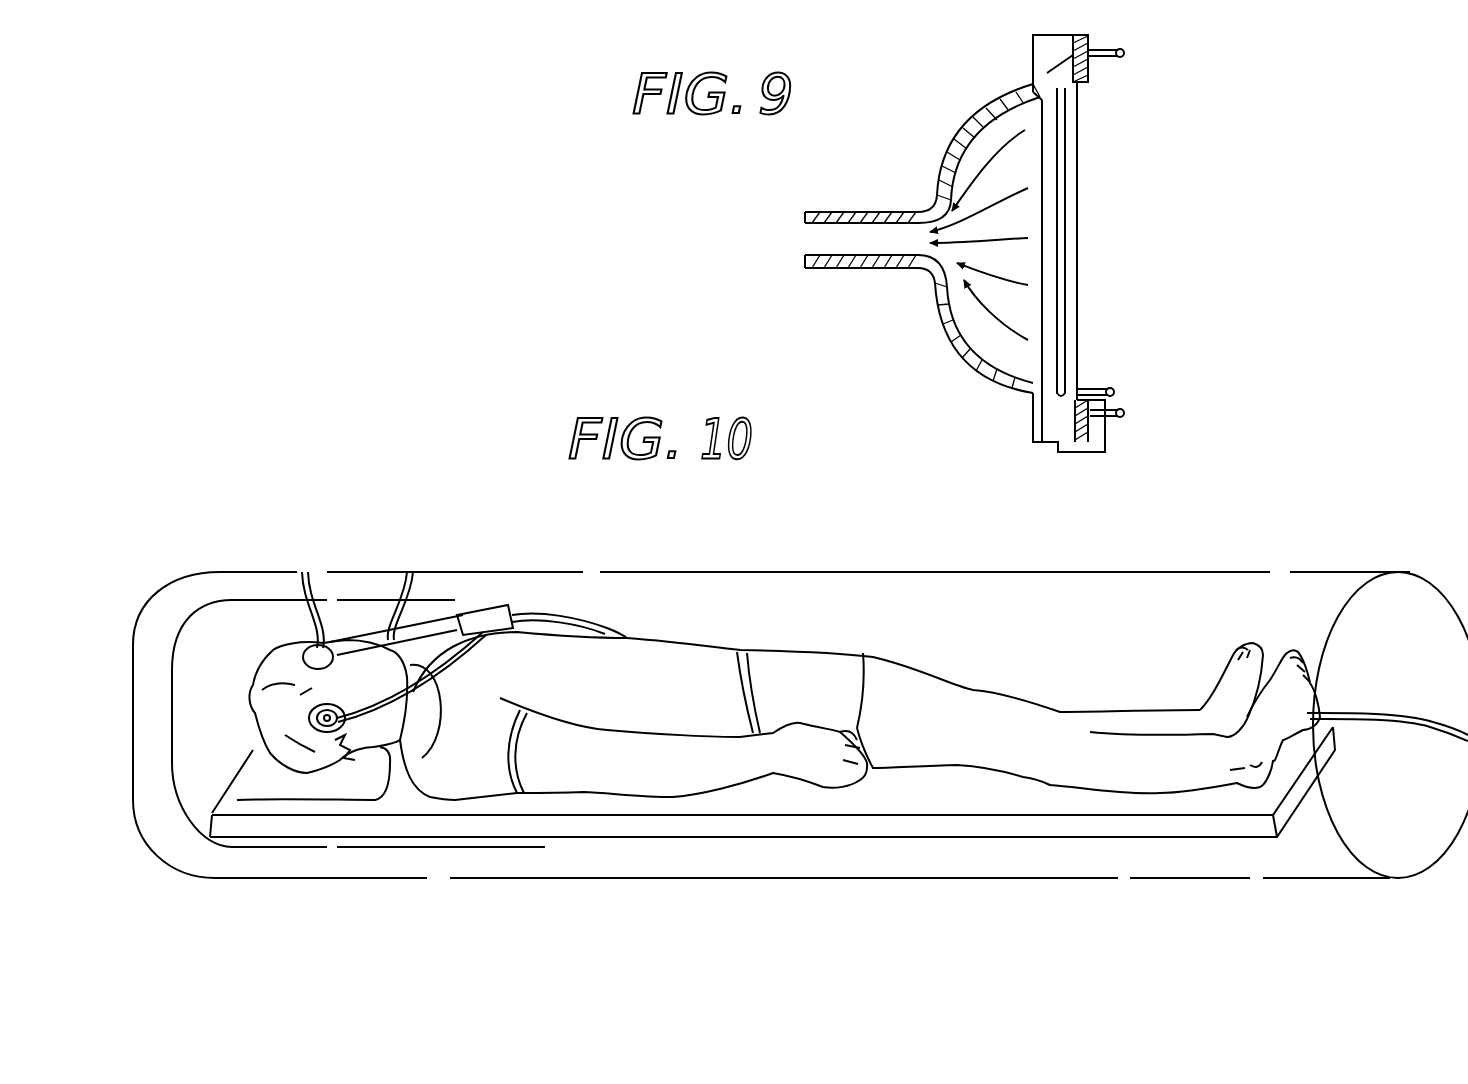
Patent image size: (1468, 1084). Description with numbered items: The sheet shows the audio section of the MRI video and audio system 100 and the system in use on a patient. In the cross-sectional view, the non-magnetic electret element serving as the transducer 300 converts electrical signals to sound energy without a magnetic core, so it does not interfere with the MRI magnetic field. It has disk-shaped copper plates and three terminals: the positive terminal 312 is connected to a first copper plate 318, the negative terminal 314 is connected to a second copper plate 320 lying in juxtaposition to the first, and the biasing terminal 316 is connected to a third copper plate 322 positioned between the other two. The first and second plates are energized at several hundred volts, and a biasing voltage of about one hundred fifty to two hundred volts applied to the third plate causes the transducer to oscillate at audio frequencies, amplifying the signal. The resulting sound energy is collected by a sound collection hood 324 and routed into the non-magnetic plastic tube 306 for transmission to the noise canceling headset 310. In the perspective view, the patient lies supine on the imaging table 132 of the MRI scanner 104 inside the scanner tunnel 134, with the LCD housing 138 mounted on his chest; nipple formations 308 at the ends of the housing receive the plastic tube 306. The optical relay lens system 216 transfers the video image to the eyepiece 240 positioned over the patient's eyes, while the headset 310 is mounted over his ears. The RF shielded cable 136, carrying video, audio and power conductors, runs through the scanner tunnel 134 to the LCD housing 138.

In FIG. 9, the non-magnetic electret element transducer 300 is at (1220, 240).
In FIG. 9, the plastic tube 306 is at (817, 210).
In FIG. 10, the plastic tube 306 is at (468, 653).
In FIG. 10, the nipple formation 308 is at (483, 622).
In FIG. 10, the noise canceling headset 310 is at (307, 719).
In FIG. 9, the positive terminal 312 is at (1123, 417).
In FIG. 9, the negative terminal 314 is at (1122, 56).
In FIG. 9, the biasing terminal 316 is at (1110, 388).
In FIG. 9, the first copper plate 318 is at (1072, 218).
In FIG. 9, the second copper plate 320 is at (1047, 73).
In FIG. 9, the third copper plate 322 is at (1057, 432).
In FIG. 9, the sound collection hood 324 is at (950, 153).
In FIG. 10, the MRI video and audio system 100 is at (502, 602).
In FIG. 10, the MRI scanner 104 is at (807, 572).
In FIG. 10, the imaging table 132 is at (1227, 827).
In FIG. 10, the scanner tunnel 134 is at (1408, 606).
In FIG. 10, the RF shielded cable 136 is at (608, 628).
In FIG. 10, the LCD housing 138 is at (512, 615).
In FIG. 10, the optical relay lens system 216 is at (416, 589).
In FIG. 10, the eyepiece 240 is at (306, 593).